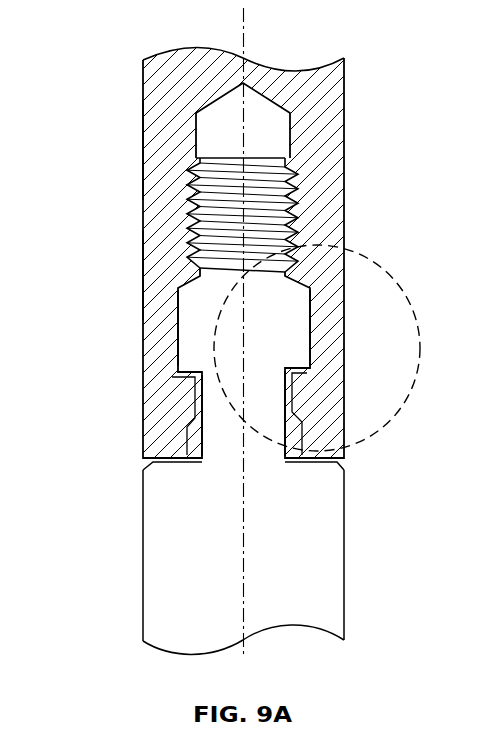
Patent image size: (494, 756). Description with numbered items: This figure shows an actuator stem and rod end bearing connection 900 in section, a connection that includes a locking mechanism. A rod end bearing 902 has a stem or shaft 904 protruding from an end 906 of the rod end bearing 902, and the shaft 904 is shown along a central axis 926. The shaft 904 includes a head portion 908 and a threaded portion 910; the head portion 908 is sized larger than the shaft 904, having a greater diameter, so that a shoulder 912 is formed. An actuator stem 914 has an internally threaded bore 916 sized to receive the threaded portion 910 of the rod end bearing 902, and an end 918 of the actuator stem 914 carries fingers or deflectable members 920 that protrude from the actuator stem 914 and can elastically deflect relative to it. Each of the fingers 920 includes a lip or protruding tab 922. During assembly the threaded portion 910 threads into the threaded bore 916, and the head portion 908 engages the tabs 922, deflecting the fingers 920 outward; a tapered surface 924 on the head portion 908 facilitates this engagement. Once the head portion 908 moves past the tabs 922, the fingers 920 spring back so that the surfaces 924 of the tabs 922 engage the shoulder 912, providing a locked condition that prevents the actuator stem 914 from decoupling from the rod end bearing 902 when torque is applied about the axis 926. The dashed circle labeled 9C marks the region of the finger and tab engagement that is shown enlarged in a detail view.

The actuator stem and rod end bearing connection 900 is at (137, 48).
The rod end bearing 902 is at (143, 557).
The shaft 904 is at (162, 453).
The end of the rod end bearing 906 is at (287, 461).
The head portion 908 is at (312, 312).
The threaded portion 910 is at (272, 180).
The shoulder 912 is at (192, 368).
The actuator stem 914 is at (143, 158).
The internally threaded bore 916 is at (266, 98).
The end of the actuator stem 918 is at (143, 272).
The fingers 920 is at (143, 373).
The tab 922 is at (190, 412).
The tapered surface 924 is at (178, 372).
The axis 926 is at (244, 32).
The detail view circle 9C is at (367, 257).